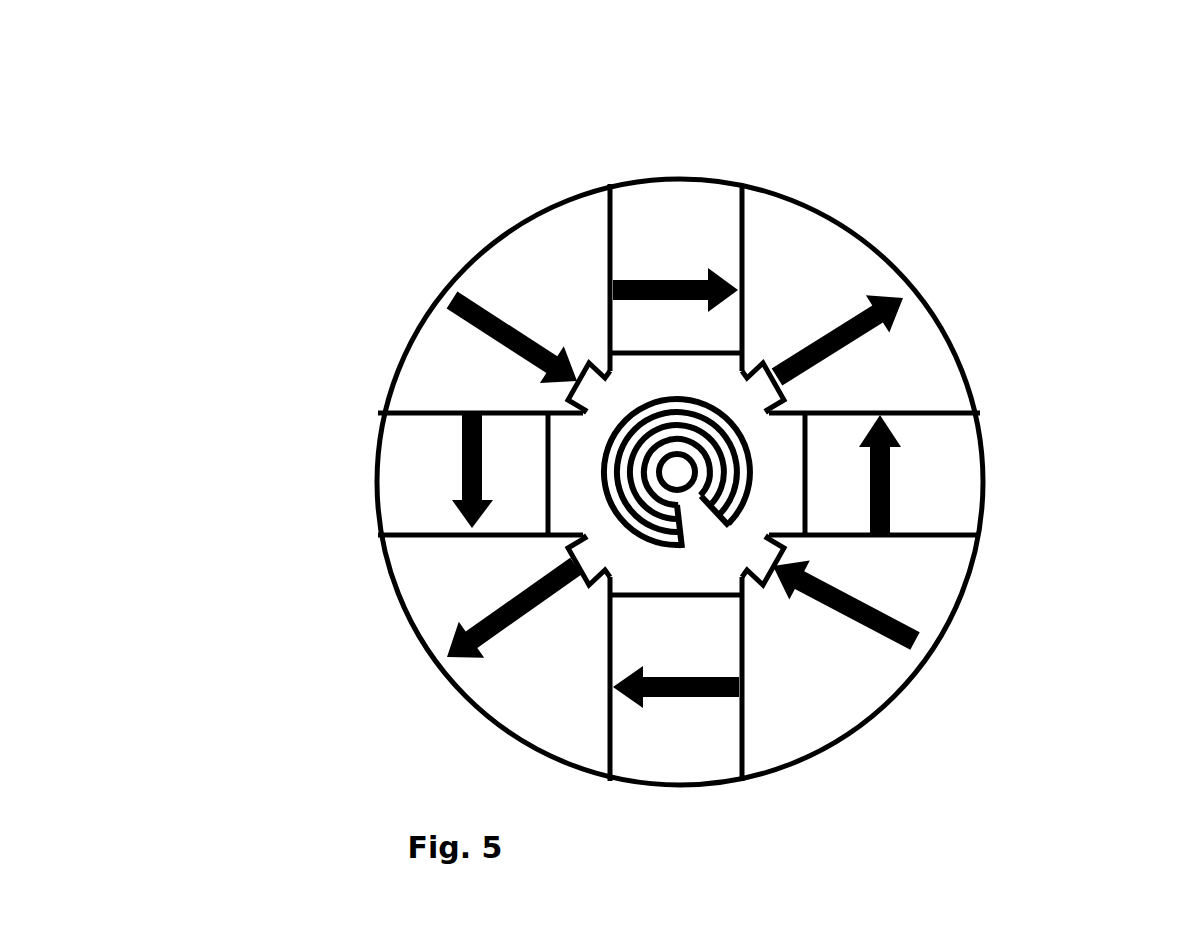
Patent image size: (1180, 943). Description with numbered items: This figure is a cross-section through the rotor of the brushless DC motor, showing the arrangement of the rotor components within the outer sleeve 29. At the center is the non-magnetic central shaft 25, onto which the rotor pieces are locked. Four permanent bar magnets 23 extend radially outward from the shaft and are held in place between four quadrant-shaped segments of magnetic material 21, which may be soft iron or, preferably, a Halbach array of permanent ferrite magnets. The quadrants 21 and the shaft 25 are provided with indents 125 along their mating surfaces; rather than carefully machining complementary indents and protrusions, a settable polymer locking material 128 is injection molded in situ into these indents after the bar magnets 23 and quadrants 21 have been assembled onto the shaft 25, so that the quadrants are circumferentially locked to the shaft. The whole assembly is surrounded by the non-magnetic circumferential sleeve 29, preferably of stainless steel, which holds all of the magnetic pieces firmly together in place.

The quadrant-shaped magnetic material 21 is at (518, 295).
The permanent bar magnets 23 is at (680, 232).
The central shaft 25 is at (733, 441).
The non-magnetic circumferential sleeve 29 is at (950, 632).
The indents 125 is at (772, 375).
The settable polymer locking material 128 is at (577, 444).